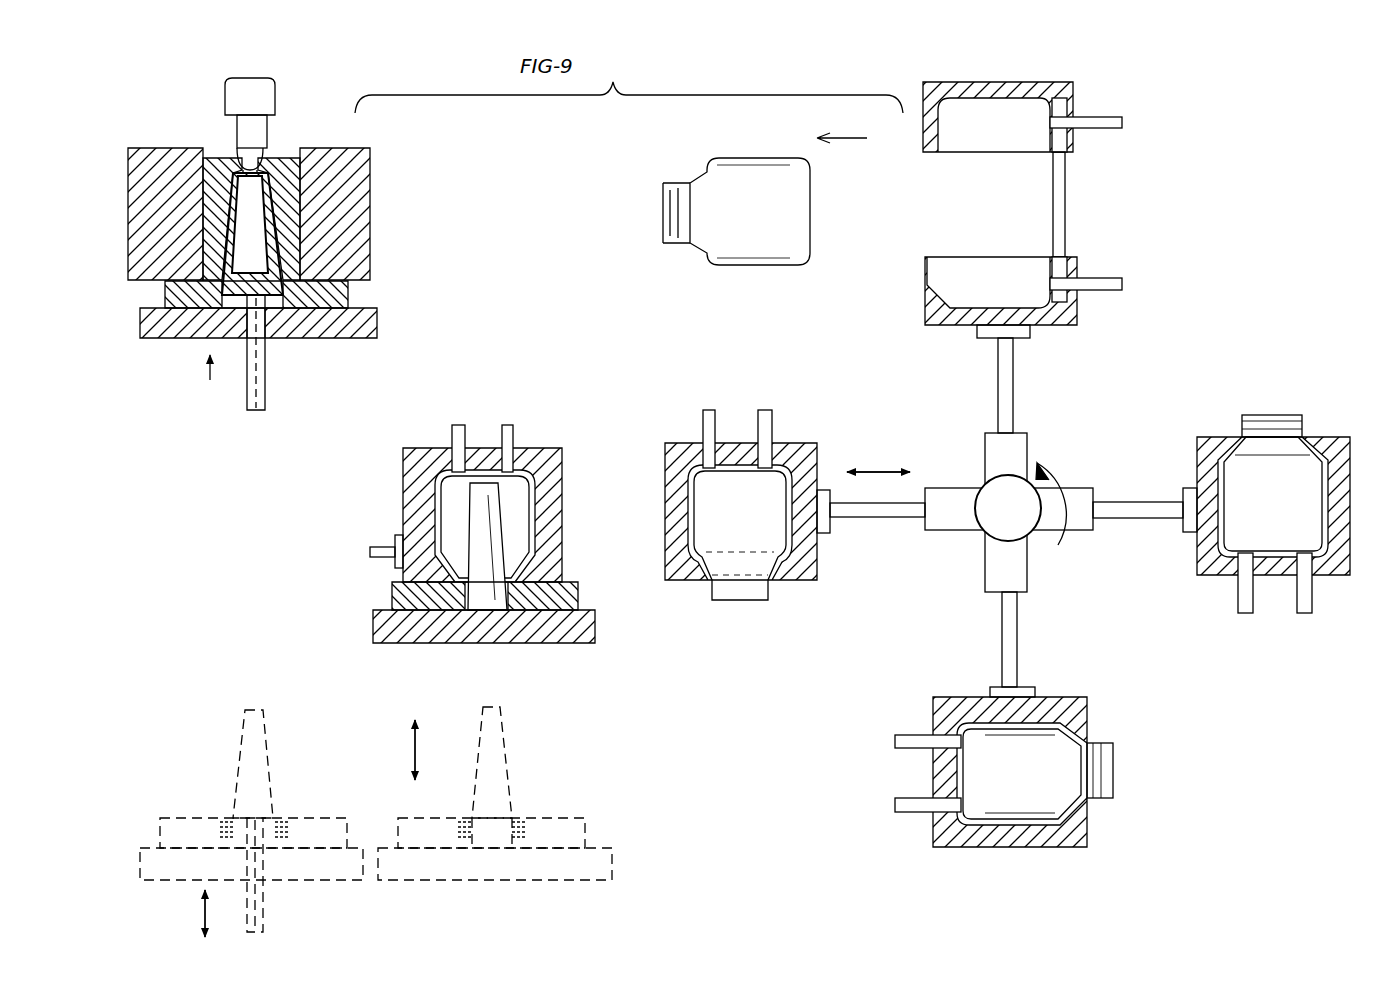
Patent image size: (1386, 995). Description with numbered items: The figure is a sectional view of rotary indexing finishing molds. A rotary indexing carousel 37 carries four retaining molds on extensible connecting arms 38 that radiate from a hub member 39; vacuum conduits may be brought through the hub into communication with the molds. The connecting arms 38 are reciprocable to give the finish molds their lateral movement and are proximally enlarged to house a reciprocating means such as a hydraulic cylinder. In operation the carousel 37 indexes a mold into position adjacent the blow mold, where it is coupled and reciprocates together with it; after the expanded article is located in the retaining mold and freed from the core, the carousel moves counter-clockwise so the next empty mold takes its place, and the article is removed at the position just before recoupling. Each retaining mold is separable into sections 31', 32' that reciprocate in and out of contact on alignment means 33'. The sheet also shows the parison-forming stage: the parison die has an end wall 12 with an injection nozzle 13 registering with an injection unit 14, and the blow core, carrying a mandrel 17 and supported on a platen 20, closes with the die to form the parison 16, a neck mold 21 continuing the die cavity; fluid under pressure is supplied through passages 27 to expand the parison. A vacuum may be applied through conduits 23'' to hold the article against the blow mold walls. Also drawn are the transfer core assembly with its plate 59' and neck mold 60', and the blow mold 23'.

The end wall 12 is at (215, 165).
The injection nozzle 13 is at (275, 162).
The injection unit 14 is at (270, 100).
The parison 16 is at (265, 205).
The mandrel 17 is at (266, 395).
The platen 20 is at (348, 330).
The neck mold 21 is at (348, 290).
The passages 27 is at (262, 358).
The mold section 31' is at (1028, 110).
The mold section 32' is at (1031, 291).
The alignment means 33' is at (1098, 204).
The preform mold 23' is at (483, 490).
The vacuum conduit 23'' is at (482, 422).
The rotary indexing carousel 37 is at (1160, 650).
The extensible connecting arm 38 is at (992, 455).
The hub member 39 is at (1000, 515).
The base plate 59' is at (512, 629).
The stripper plate 60' is at (511, 592).